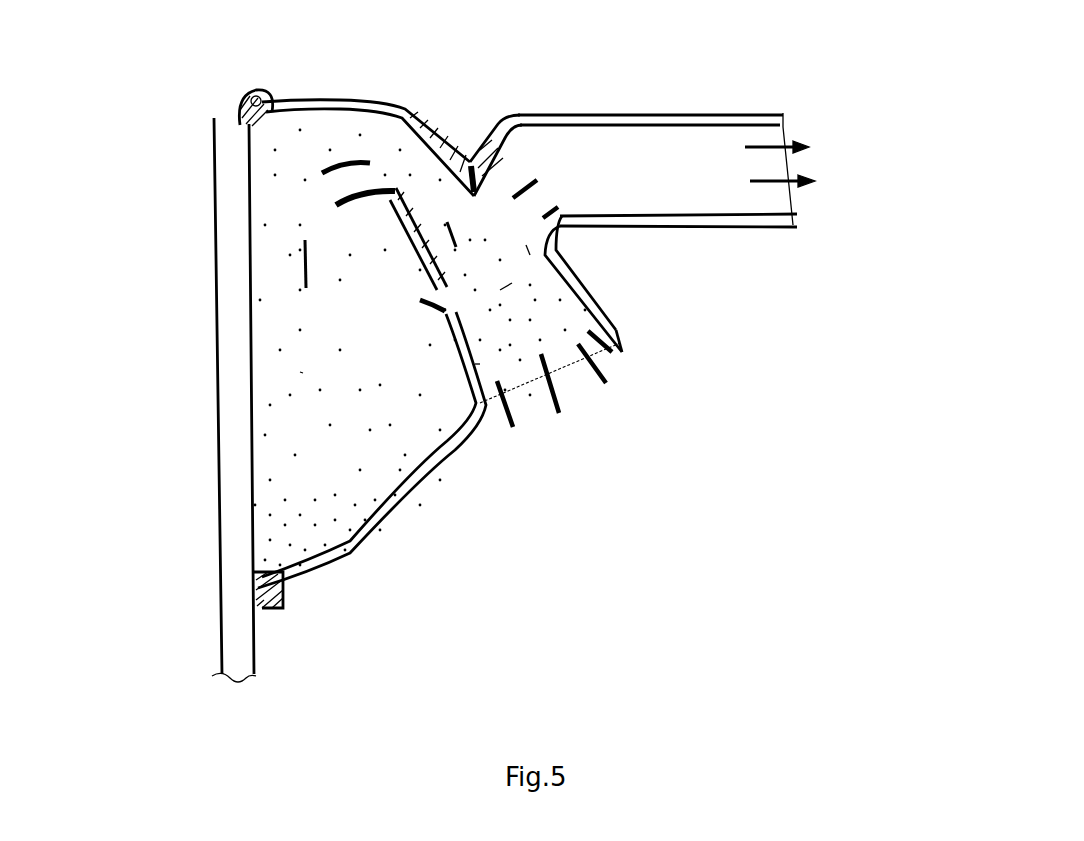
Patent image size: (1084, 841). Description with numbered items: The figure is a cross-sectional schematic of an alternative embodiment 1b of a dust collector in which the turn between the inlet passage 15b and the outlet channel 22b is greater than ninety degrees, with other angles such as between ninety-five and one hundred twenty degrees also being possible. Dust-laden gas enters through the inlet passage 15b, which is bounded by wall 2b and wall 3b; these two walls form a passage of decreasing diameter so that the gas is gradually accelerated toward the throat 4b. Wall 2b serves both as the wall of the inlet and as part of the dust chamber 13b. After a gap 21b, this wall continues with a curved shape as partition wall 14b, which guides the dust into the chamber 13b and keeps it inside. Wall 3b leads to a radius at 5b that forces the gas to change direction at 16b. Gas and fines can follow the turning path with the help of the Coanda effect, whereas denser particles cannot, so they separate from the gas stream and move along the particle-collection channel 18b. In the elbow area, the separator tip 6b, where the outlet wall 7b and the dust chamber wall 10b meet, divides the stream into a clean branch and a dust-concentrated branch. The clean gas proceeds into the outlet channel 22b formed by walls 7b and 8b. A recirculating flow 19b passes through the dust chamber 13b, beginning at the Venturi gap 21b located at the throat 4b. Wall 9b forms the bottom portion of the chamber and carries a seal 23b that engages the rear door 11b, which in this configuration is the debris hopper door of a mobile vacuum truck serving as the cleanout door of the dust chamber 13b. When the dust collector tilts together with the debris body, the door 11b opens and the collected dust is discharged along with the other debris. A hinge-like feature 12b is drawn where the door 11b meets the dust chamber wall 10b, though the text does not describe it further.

The alternative embodiment 1b is at (498, 354).
The wall 2b is at (477, 365).
The wall 3b is at (612, 330).
The throat 4b is at (495, 287).
The radius 5b is at (563, 247).
The separator tip 6b is at (471, 158).
The outlet wall 7b is at (637, 113).
The wall 8b is at (683, 227).
The wall 9b is at (345, 555).
The dust chamber wall 10b is at (347, 100).
The cleanout door 11b is at (228, 472).
The hinge 12b is at (245, 107).
The dust chamber 13b is at (300, 372).
The partition wall 14b is at (397, 205).
The inlet passage 15b is at (580, 382).
The direction change location 16b is at (528, 250).
The particle-collection channel 18b is at (449, 218).
The recirculating flow 19b is at (290, 211).
The Venturi gap 21b is at (425, 302).
The outlet channel 22b is at (790, 168).
The seal 23b is at (255, 597).